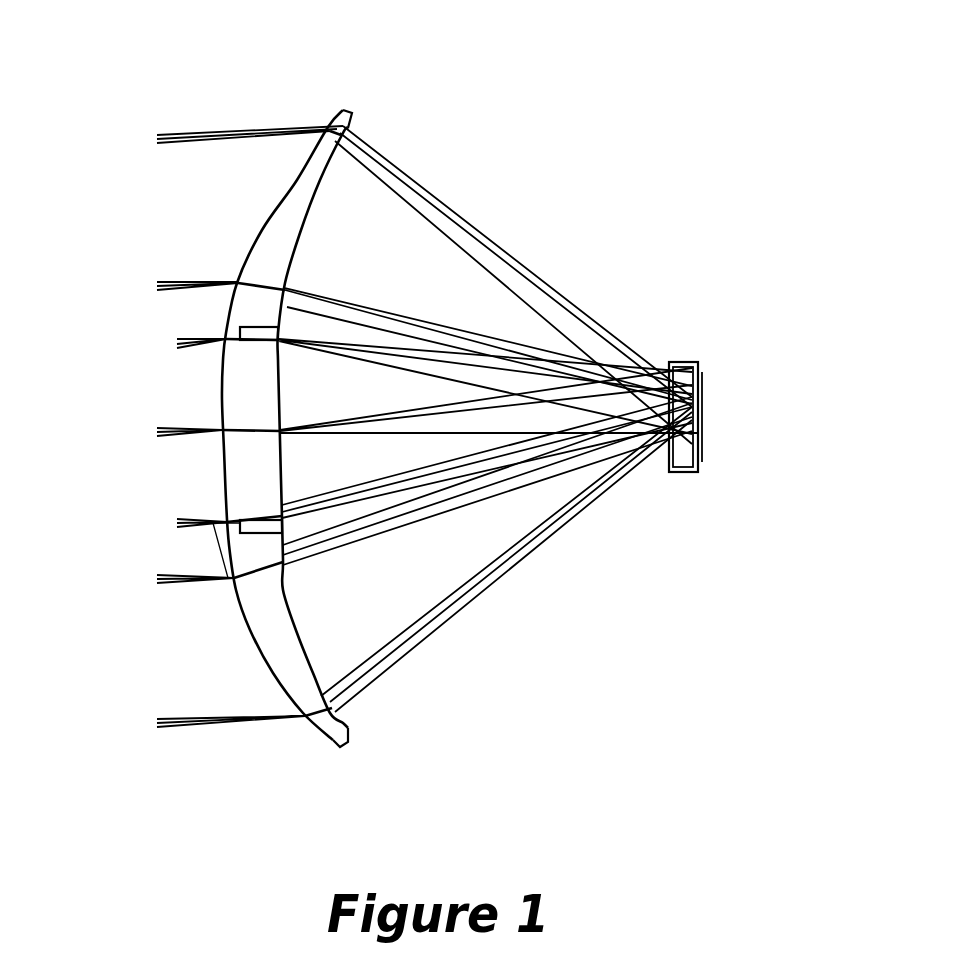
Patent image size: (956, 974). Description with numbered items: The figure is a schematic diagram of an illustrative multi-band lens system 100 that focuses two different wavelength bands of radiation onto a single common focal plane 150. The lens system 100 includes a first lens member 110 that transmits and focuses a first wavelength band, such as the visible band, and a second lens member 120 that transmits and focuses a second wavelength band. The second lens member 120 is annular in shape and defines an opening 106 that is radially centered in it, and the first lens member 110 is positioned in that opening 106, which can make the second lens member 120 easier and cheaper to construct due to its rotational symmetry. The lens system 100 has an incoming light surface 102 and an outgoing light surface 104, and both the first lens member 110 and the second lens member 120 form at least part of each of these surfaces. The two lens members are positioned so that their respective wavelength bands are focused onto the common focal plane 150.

The lens system 100 is at (383, 78).
The second lens member 120 is at (280, 218).
The incoming light surface 102 is at (223, 314).
The outgoing light surface 104 is at (292, 270).
The first lens member 110 is at (257, 388).
The opening 106 is at (190, 477).
The common focal plane 150 is at (700, 406).